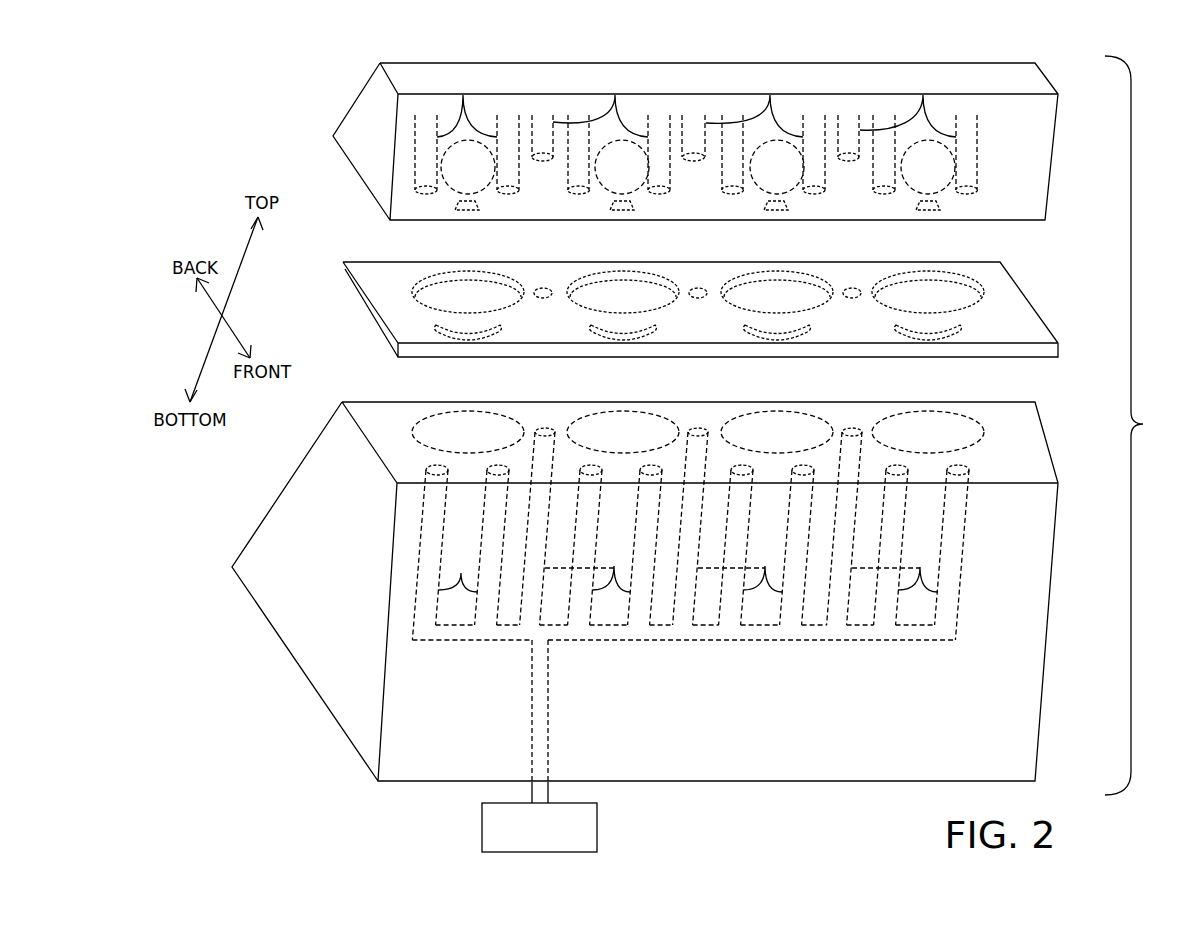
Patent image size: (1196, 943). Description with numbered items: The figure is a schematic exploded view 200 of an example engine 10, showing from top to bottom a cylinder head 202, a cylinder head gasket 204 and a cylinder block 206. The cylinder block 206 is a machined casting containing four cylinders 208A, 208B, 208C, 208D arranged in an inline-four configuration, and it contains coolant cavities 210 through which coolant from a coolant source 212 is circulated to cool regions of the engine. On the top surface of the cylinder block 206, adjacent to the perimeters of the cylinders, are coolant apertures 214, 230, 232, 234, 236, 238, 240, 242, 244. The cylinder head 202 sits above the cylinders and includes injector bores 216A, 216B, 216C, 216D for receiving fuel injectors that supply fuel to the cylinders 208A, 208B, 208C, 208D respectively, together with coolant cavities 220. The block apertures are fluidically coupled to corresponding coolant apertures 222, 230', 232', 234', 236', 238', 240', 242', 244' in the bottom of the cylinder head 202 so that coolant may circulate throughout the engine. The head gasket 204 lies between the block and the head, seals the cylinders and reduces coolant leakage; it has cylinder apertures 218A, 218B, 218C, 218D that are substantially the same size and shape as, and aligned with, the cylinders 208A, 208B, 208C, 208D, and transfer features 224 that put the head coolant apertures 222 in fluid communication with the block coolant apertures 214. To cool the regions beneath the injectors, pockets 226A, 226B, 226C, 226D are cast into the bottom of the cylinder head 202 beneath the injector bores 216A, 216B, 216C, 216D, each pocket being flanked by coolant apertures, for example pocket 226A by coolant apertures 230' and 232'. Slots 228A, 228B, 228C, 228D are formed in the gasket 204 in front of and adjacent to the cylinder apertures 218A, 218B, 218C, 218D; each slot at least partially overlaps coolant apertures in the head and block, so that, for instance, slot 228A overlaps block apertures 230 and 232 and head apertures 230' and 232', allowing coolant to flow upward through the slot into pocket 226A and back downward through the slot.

The engine 10 is at (206, 644).
The exploded view 200 is at (1145, 425).
The cylinder head 202 is at (349, 108).
The cylinder head gasket 204 is at (343, 262).
The cylinder block 206 is at (249, 543).
The cylinder 208A is at (468, 432).
The cylinder 208B is at (623, 432).
The cylinder 208C is at (777, 432).
The cylinder 208D is at (928, 432).
The coolant cavities 210 is at (683, 591).
The coolant source 212 is at (539, 746).
The coolant apertures 214 is at (548, 429).
The injector bore 216A is at (468, 167).
The injector bore 216B is at (622, 167).
The injector bore 216C is at (777, 167).
The injector bore 216D is at (928, 167).
The cylinder aperture 218A is at (468, 292).
The cylinder aperture 218B is at (623, 292).
The cylinder aperture 218C is at (777, 292).
The cylinder aperture 218D is at (928, 292).
The coolant cavities 220 is at (463, 95).
The coolant apertures 222 is at (850, 187).
The transfer features 224 is at (538, 298).
The pocket 226A is at (466, 212).
The pocket 226B is at (625, 212).
The pocket 226C is at (777, 212).
The pocket 226D is at (930, 212).
The slot 228A is at (471, 342).
The slot 228B is at (626, 342).
The slot 228C is at (780, 342).
The slot 228D is at (931, 342).
The coolant aperture 230 is at (396, 552).
The coolant aperture 232 is at (479, 545).
The coolant aperture 234 is at (574, 545).
The coolant aperture 236 is at (631, 545).
The coolant aperture 238 is at (726, 545).
The coolant aperture 240 is at (783, 545).
The coolant aperture 242 is at (906, 545).
The coolant aperture 244 is at (981, 552).
The coolant aperture 230' is at (406, 181).
The coolant aperture 232' is at (537, 181).
The coolant aperture 234' is at (596, 186).
The coolant aperture 236' is at (690, 181).
The coolant aperture 238' is at (751, 186).
The coolant aperture 240' is at (843, 180).
The coolant aperture 242' is at (903, 186).
The coolant aperture 244' is at (996, 180).